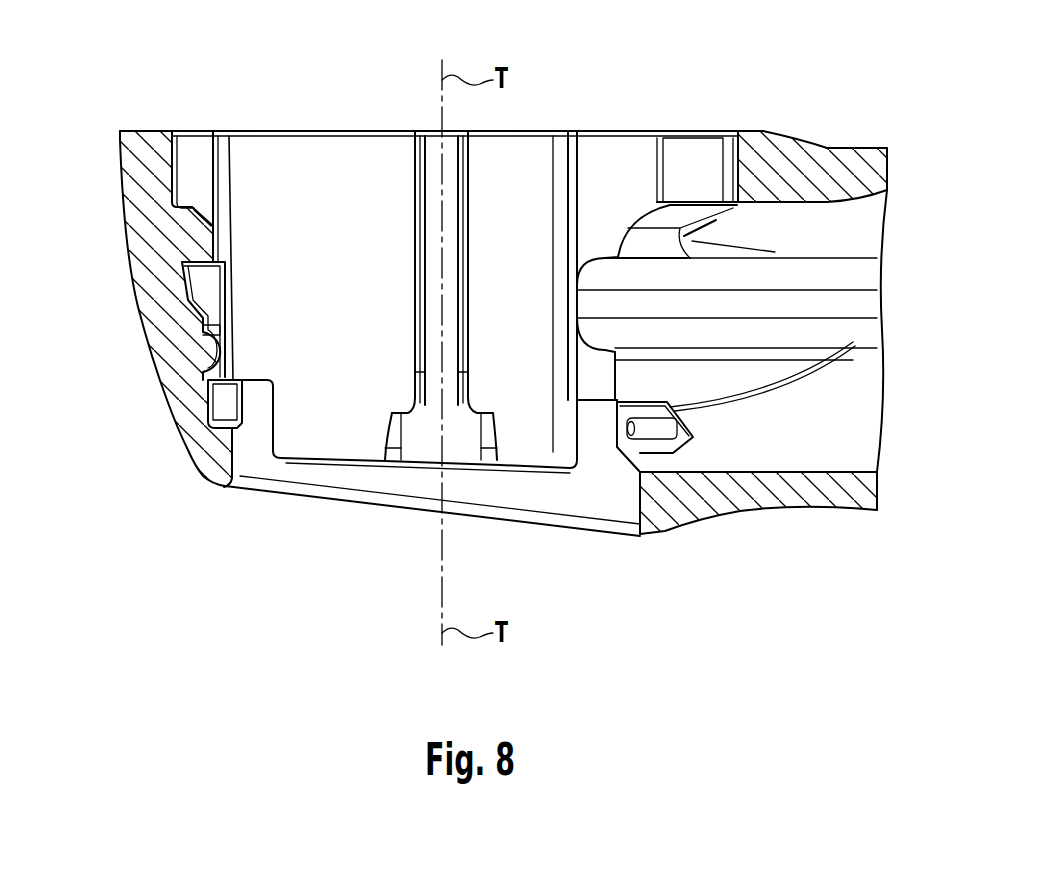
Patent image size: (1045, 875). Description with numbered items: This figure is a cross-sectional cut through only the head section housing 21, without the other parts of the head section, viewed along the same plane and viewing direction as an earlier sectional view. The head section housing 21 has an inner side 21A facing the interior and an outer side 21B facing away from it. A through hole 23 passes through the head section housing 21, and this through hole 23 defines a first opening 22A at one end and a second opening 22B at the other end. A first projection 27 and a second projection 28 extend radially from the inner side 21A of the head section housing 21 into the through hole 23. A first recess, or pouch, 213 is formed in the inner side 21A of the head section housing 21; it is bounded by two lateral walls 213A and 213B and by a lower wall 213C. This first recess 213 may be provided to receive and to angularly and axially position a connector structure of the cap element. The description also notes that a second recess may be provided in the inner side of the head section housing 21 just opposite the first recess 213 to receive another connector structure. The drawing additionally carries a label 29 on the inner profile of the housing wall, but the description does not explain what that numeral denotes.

The head section housing 21 is at (212, 460).
The inner side 21A is at (188, 190).
The outer side 21B is at (120, 185).
The first opening 22A is at (379, 597).
The second opening 22B is at (381, 102).
The through hole 23 is at (311, 597).
The first projection 27 is at (197, 328).
The second projection 28 is at (197, 233).
The spring clip 29 is at (197, 288).
The first recess 213 is at (427, 450).
The lateral wall 213A is at (386, 450).
The lateral wall 213B is at (500, 455).
The lower wall 213C is at (457, 483).